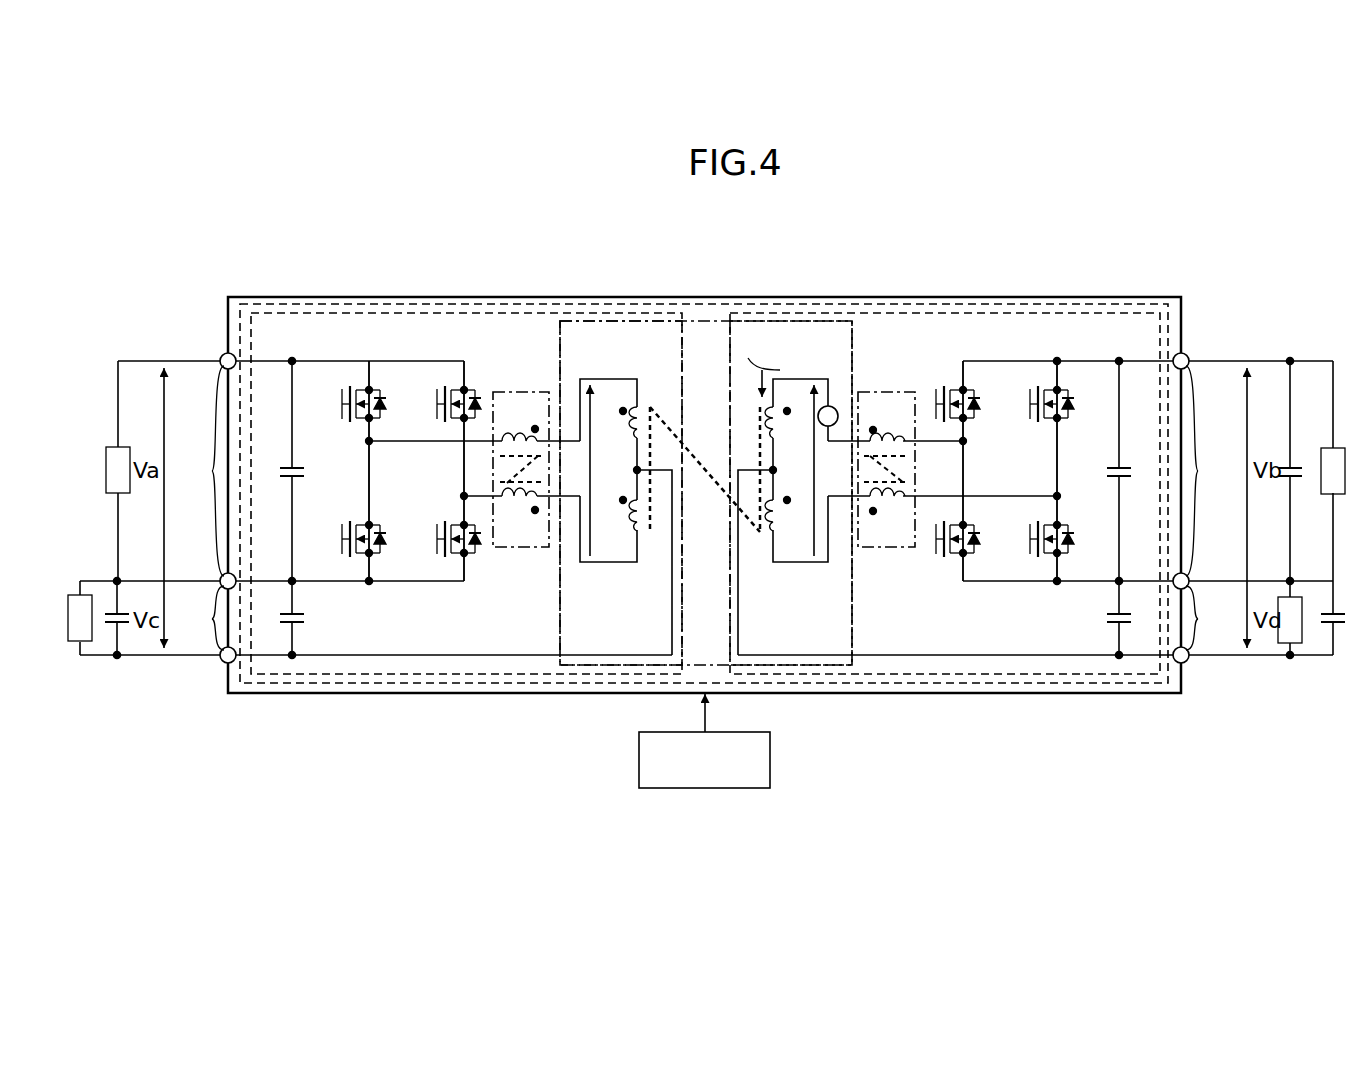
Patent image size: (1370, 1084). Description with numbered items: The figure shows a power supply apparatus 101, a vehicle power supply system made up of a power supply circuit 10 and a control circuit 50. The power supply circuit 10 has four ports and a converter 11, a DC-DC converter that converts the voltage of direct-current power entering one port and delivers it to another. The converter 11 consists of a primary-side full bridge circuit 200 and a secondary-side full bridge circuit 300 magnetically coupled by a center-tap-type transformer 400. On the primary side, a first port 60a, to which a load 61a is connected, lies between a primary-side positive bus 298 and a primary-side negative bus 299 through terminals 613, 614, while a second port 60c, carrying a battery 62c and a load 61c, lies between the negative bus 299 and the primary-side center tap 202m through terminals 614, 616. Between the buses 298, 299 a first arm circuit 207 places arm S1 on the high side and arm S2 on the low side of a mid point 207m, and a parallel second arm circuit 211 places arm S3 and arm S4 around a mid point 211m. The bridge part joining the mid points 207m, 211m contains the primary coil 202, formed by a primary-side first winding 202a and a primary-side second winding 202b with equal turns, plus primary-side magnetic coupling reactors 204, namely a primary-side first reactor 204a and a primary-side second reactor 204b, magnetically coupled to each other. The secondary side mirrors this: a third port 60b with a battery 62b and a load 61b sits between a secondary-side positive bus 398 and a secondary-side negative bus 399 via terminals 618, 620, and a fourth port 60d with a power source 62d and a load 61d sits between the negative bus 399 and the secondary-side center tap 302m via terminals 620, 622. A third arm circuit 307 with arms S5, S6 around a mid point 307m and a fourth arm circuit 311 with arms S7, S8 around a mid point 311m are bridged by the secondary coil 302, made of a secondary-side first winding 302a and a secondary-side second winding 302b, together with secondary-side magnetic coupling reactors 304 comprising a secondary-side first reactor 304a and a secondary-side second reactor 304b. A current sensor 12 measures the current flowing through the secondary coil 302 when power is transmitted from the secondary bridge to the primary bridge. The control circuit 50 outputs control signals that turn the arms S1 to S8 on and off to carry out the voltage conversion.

The power supply circuit 10 is at (1073, 297).
The converter 11 is at (1024, 304).
The power supply apparatus 101 is at (212, 259).
The primary-side full bridge circuit 200 is at (540, 303).
The secondary-side full bridge circuit 300 is at (869, 312).
The transformer 400 is at (707, 320).
The primary coil 202 is at (621, 491).
The primary-side first winding 202a is at (624, 405).
The primary-side second winding 202b is at (630, 556).
The primary-side center tap 202m is at (637, 470).
The primary-side magnetic coupling reactors 204 is at (522, 444).
The primary-side first reactor 204a is at (519, 433).
The primary-side second reactor 204b is at (519, 516).
The first arm circuit 207 is at (356, 567).
The mid point 207m is at (369, 441).
The second arm circuit 211 is at (448, 567).
The mid point 211m is at (464, 496).
The primary-side positive bus 298 is at (320, 361).
The primary-side negative bus 299 is at (322, 585).
The secondary coil 302 is at (794, 491).
The secondary-side first winding 302a is at (778, 405).
The secondary-side second winding 302b is at (785, 556).
The secondary-side center tap 302m is at (773, 470).
The secondary-side magnetic coupling reactors 304 is at (885, 444).
The secondary-side first reactor 304a is at (885, 433).
The secondary-side second reactor 304b is at (885, 516).
The third arm circuit 307 is at (938, 567).
The mid point 307m is at (963, 441).
The fourth arm circuit 311 is at (1028, 567).
The mid point 311m is at (1057, 496).
The secondary-side positive bus 398 is at (1098, 361).
The secondary-side negative bus 399 is at (1083, 584).
The current sensor 12 is at (836, 407).
The control circuit 50 is at (772, 762).
The first port 60a is at (194, 473).
The third port 60b is at (1216, 473).
The second port 60c is at (194, 615).
The fourth port 60d is at (1216, 615).
The load 61a is at (120, 446).
The load 61b is at (1330, 447).
The load 61c is at (77, 643).
The load 61d is at (1292, 644).
The battery 62b is at (1290, 482).
The battery 62c is at (114, 610).
The power source 62d is at (1335, 625).
The terminal 613 is at (221, 358).
The terminal 614 is at (236, 579).
The terminal 616 is at (222, 664).
The terminal 618 is at (1190, 358).
The terminal 620 is at (1175, 578).
The terminal 622 is at (1186, 664).
The arm S1 is at (342, 404).
The arm S2 is at (342, 539).
The arm S3 is at (437, 404).
The arm S4 is at (437, 539).
The arm S5 is at (936, 393).
The arm S6 is at (936, 553).
The arm S7 is at (1030, 404).
The arm S8 is at (1030, 539).